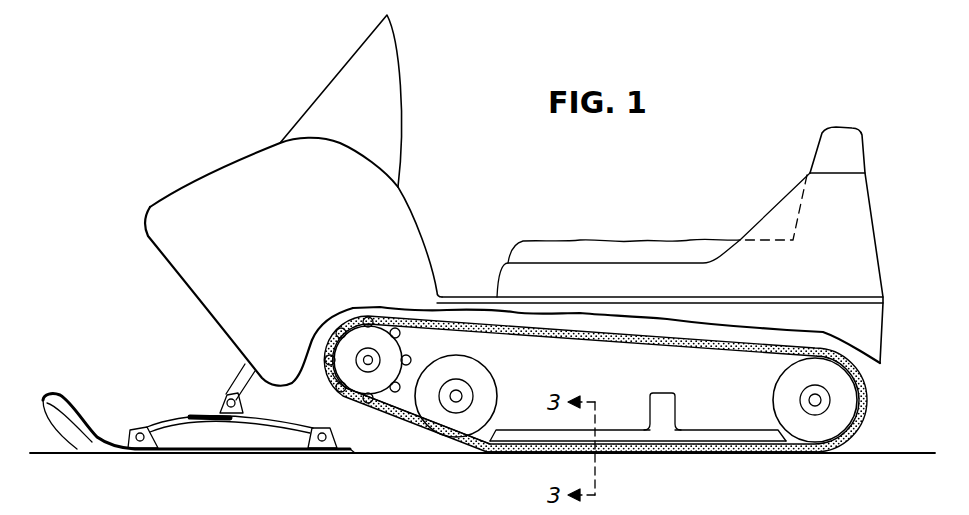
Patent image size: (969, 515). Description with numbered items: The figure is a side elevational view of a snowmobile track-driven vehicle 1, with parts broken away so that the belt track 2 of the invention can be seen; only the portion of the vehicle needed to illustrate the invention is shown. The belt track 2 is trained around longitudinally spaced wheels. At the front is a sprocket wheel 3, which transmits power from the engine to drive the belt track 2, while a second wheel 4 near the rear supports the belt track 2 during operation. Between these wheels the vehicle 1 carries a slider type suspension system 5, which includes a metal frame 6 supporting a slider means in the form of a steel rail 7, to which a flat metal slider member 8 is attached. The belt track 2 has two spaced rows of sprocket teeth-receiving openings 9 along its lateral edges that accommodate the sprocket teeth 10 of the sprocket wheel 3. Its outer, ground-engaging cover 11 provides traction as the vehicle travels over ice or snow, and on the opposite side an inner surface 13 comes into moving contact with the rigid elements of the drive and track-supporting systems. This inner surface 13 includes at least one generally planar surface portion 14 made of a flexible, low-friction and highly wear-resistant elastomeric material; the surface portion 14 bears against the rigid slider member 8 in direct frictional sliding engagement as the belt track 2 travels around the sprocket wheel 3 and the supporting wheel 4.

The track-driven vehicle 1 is at (230, 163).
The belt track 2 is at (857, 428).
The sprocket wheel 3 is at (357, 337).
The second wheel 4 is at (787, 396).
The slider type suspension system 5 is at (653, 395).
The metal frame 6 is at (667, 407).
The steel rail 7 is at (690, 434).
The slider member 8 is at (690, 444).
The sprocket teeth-receiving openings 9 is at (329, 385).
The sprocket teeth 10 is at (399, 340).
The ground-engaging cover 11 is at (483, 453).
The inner surface 13 is at (407, 406).
The surface portion 14 is at (524, 445).